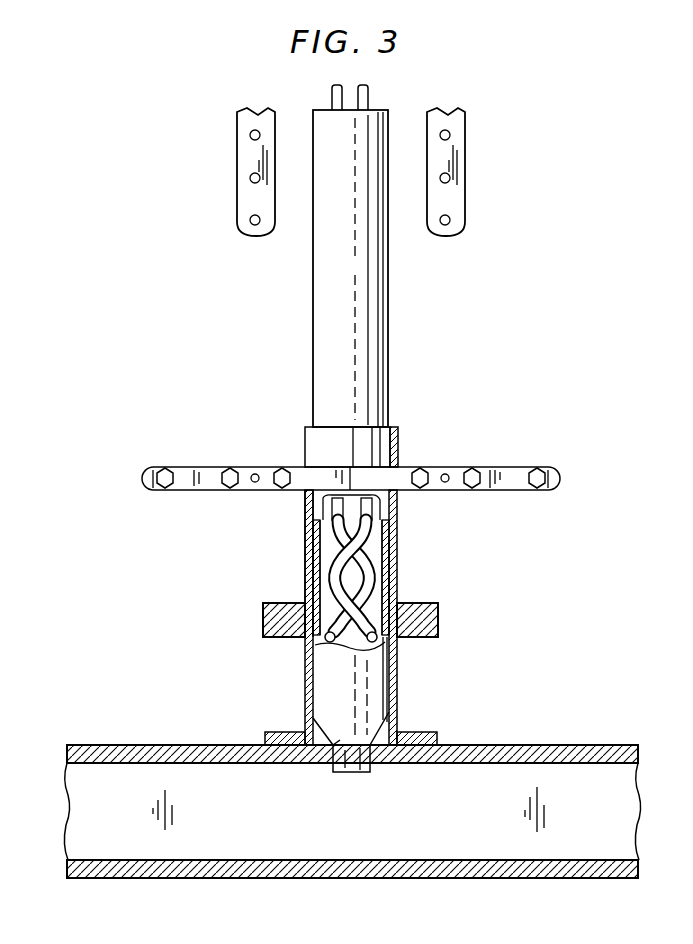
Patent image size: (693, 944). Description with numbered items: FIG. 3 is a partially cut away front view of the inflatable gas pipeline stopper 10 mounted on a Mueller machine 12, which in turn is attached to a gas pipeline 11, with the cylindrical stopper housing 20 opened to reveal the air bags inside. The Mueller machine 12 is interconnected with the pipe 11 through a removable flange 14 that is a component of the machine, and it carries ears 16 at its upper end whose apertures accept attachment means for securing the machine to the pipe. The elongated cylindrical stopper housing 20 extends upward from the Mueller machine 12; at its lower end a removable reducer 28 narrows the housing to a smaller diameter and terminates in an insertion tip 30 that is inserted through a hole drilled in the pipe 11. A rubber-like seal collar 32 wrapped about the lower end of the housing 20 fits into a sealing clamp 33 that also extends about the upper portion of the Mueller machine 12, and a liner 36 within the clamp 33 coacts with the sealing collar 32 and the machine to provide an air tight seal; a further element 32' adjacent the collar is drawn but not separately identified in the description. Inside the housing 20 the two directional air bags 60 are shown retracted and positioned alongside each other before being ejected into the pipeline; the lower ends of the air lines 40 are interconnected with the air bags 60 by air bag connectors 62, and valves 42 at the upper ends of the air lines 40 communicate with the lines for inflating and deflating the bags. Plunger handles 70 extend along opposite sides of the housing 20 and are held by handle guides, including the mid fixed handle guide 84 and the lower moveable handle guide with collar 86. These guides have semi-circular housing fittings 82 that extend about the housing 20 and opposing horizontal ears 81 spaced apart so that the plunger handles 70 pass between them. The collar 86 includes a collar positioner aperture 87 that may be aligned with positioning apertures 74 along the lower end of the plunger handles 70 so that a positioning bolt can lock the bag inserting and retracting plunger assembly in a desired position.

The inflatable gas pipeline stopper 10 is at (510, 168).
The gas pipeline 11 is at (571, 745).
The Mueller machine 12 is at (397, 690).
The removable flange 14 is at (437, 740).
The ears 16 is at (438, 615).
The cylindrical stopper housing 20 is at (385, 352).
The removable reducer 28 is at (372, 737).
The insertion tip 30 is at (352, 772).
The rubber-like seal collar 32 is at (353, 563).
The upper sleeve section 32' is at (416, 418).
The sealing clamp 33 is at (389, 585).
The liner 36 is at (397, 596).
The air lines 40 is at (400, 503).
The valves 42 is at (332, 97).
The directional air bags 60 is at (389, 562).
The air bag connectors 62 is at (389, 532).
The plunger handles 70 is at (237, 138).
The positioning apertures 74 is at (250, 220).
The horizontal ears 81 is at (190, 490).
The semi-circular housing fittings 82 is at (170, 468).
The mid fixed handle guide 84 is at (445, 474).
The lower moveable handle guide with collar 86 is at (565, 478).
The collar positioner aperture 87 is at (255, 474).